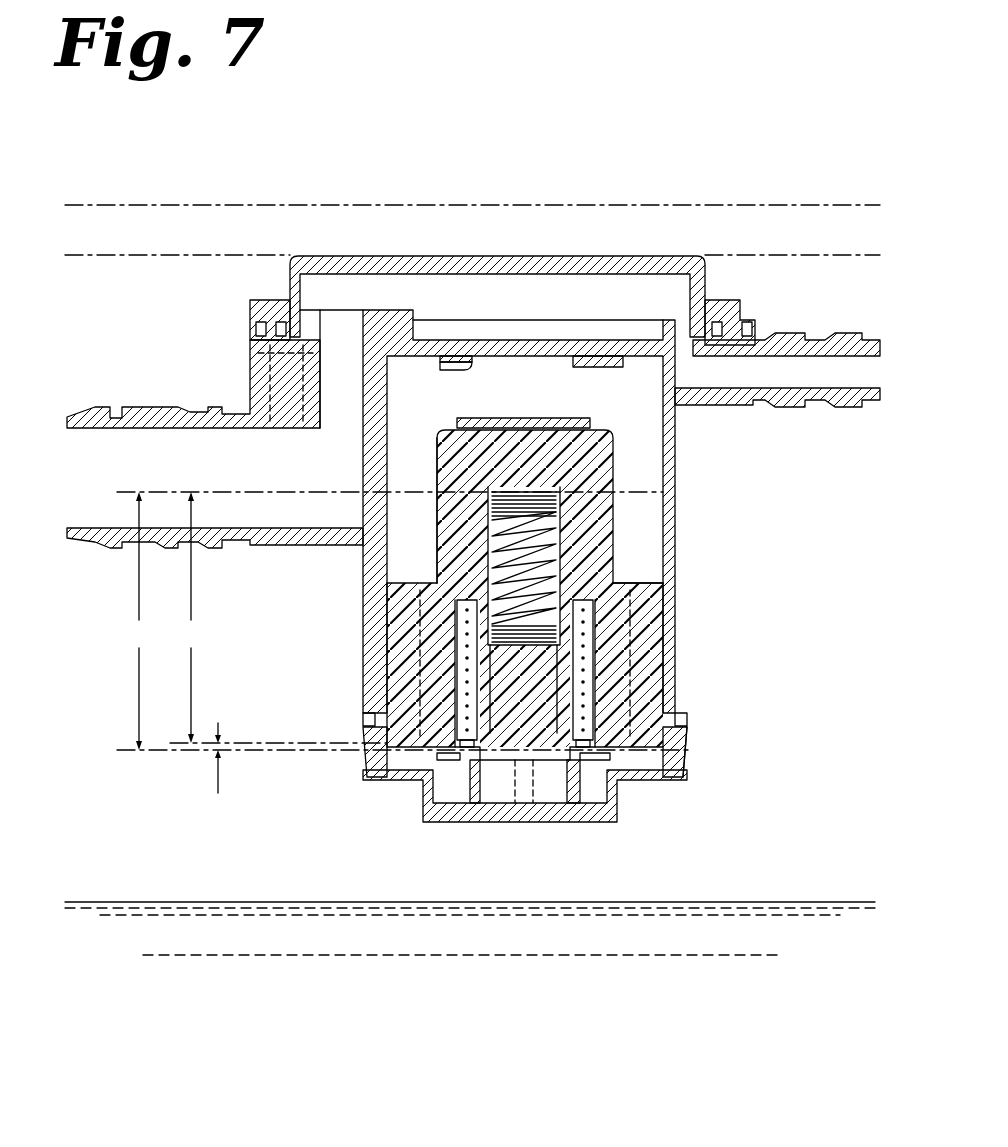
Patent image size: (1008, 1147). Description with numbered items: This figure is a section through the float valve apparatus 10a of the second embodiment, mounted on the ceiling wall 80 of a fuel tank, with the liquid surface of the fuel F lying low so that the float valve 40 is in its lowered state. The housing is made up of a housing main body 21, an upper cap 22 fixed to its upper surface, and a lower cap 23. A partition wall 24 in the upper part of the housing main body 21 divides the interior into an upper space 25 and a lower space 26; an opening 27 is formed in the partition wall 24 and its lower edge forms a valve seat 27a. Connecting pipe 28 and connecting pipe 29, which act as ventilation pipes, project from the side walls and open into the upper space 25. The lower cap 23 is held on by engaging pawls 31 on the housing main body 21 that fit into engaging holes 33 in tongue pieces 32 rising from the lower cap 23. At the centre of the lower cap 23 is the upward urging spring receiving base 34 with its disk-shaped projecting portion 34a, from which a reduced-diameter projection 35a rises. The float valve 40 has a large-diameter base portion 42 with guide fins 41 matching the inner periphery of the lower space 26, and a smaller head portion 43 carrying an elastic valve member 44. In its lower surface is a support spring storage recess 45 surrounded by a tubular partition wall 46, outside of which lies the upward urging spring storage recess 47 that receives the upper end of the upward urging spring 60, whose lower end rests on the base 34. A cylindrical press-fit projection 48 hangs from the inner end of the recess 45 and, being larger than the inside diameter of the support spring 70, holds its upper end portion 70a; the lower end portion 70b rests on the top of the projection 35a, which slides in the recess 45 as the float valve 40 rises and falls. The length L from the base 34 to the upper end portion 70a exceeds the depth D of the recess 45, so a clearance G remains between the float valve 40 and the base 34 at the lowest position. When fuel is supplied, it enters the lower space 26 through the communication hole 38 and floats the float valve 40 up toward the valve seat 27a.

The float valve apparatus 10a is at (226, 318).
The housing main body 21 is at (676, 549).
The upper cap 22 is at (709, 264).
The lower cap 23 is at (647, 787).
The partition wall 24 is at (608, 355).
The upper space 25 is at (570, 290).
The lower space 26 is at (363, 530).
The opening 27 is at (473, 363).
The valve seat 27a is at (467, 370).
The connecting pipe 28 is at (803, 340).
The connecting pipe 29 is at (160, 407).
The engaging pawl 31 is at (688, 735).
The tongue piece 32 is at (688, 714).
The engaging hole 33 is at (688, 757).
The upward urging spring receiving base 34 is at (453, 755).
The disk-shaped projecting portion 34a is at (480, 757).
The projection 35a is at (612, 675).
The communication hole 38 is at (617, 767).
The float valve 40 is at (620, 483).
The guide fins 41 is at (400, 690).
The base portion 42 is at (437, 655).
The head portion 43 is at (437, 462).
The valve member 44 is at (521, 420).
The support spring storage recess 45 is at (663, 574).
The partition wall 46 is at (663, 614).
The upward urging spring storage recess 47 is at (632, 650).
The press-fit projection 48 is at (562, 552).
The upward urging spring 60 is at (667, 700).
The support spring 70 is at (552, 538).
The upper end portion of the support spring 70a is at (557, 482).
The lower end portion of the support spring 70b is at (490, 640).
The ceiling wall 80 is at (208, 207).
The fuel F is at (137, 907).
The length L is at (139, 621).
The depth D is at (189, 617).
The clearance G is at (403, 760).